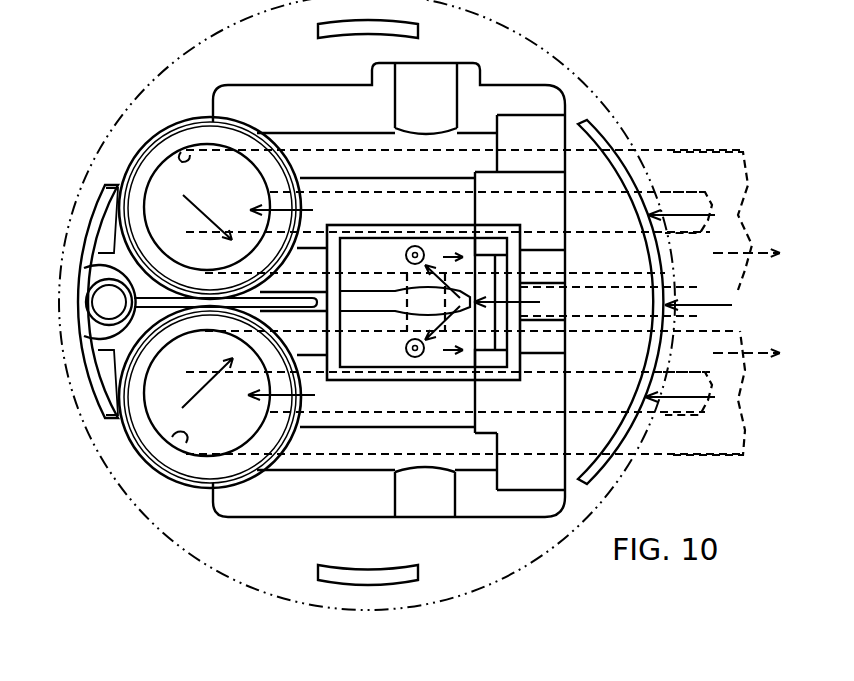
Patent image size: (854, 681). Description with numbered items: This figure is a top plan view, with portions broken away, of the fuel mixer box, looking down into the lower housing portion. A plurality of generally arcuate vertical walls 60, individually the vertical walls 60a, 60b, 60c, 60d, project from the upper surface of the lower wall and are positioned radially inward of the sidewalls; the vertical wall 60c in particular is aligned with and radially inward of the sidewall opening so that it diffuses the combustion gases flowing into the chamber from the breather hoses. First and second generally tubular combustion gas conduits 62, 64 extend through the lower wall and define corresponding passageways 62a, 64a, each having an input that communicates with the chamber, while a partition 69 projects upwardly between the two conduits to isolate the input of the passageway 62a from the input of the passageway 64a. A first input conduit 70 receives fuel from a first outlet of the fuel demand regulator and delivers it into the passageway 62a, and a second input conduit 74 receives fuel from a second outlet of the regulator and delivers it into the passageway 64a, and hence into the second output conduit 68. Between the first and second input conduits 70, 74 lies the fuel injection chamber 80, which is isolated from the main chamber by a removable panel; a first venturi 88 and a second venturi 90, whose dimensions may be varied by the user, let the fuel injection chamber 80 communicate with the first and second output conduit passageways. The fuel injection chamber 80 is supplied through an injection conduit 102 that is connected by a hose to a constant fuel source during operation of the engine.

The vertical walls 60 is at (683, 455).
The vertical wall 60a is at (80, 390).
The vertical wall 60b is at (367, 586).
The vertical wall 60c is at (602, 126).
The vertical wall 60d is at (318, 32).
The first combustion gas conduit 62 is at (252, 486).
The passageway 62a is at (185, 437).
The second combustion gas conduit 64 is at (160, 128).
The passageway 64a is at (185, 152).
The second output conduit 68 is at (673, 152).
The partition 69 is at (98, 266).
The first input conduit 70 is at (672, 415).
The second input conduit 74 is at (668, 192).
The fuel injection chamber 80 is at (360, 364).
The first venturi 88 is at (408, 358).
The second venturi 90 is at (408, 250).
The injection conduit 102 is at (725, 296).